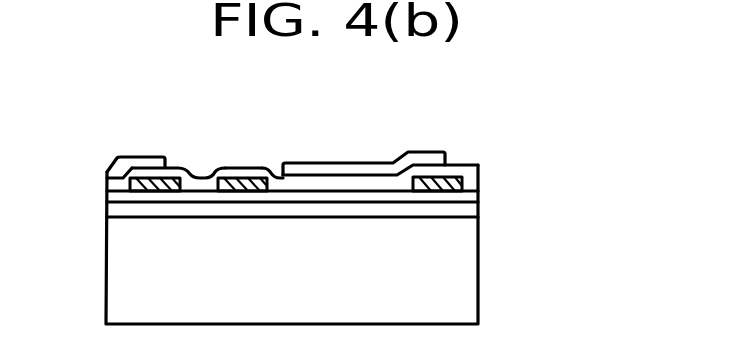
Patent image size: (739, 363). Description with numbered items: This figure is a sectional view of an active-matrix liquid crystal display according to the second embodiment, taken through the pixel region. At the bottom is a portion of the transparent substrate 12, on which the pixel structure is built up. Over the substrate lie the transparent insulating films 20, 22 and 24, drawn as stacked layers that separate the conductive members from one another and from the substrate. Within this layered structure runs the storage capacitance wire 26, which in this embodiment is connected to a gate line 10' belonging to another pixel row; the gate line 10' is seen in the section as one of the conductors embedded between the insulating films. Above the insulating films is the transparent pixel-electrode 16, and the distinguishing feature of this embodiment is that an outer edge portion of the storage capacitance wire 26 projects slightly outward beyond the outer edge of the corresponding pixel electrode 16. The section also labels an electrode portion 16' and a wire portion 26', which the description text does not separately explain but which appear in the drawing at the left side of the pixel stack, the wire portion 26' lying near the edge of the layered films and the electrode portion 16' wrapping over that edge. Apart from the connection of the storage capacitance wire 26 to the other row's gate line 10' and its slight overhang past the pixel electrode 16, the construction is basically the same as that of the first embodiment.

The transparent substrate 12 is at (475, 280).
The transparent insulating film 20 is at (478, 208).
The transparent insulating film 22 is at (478, 195).
The transparent insulating film 24 is at (478, 183).
The storage capacitance wire 26 is at (353, 174).
The gate line 10' is at (251, 142).
The upper electrode (wrap-around) 16' is at (141, 139).
The piezoelectric film edge portion 26' is at (87, 226).
The transparent pixel-electrode 16 is at (364, 139).